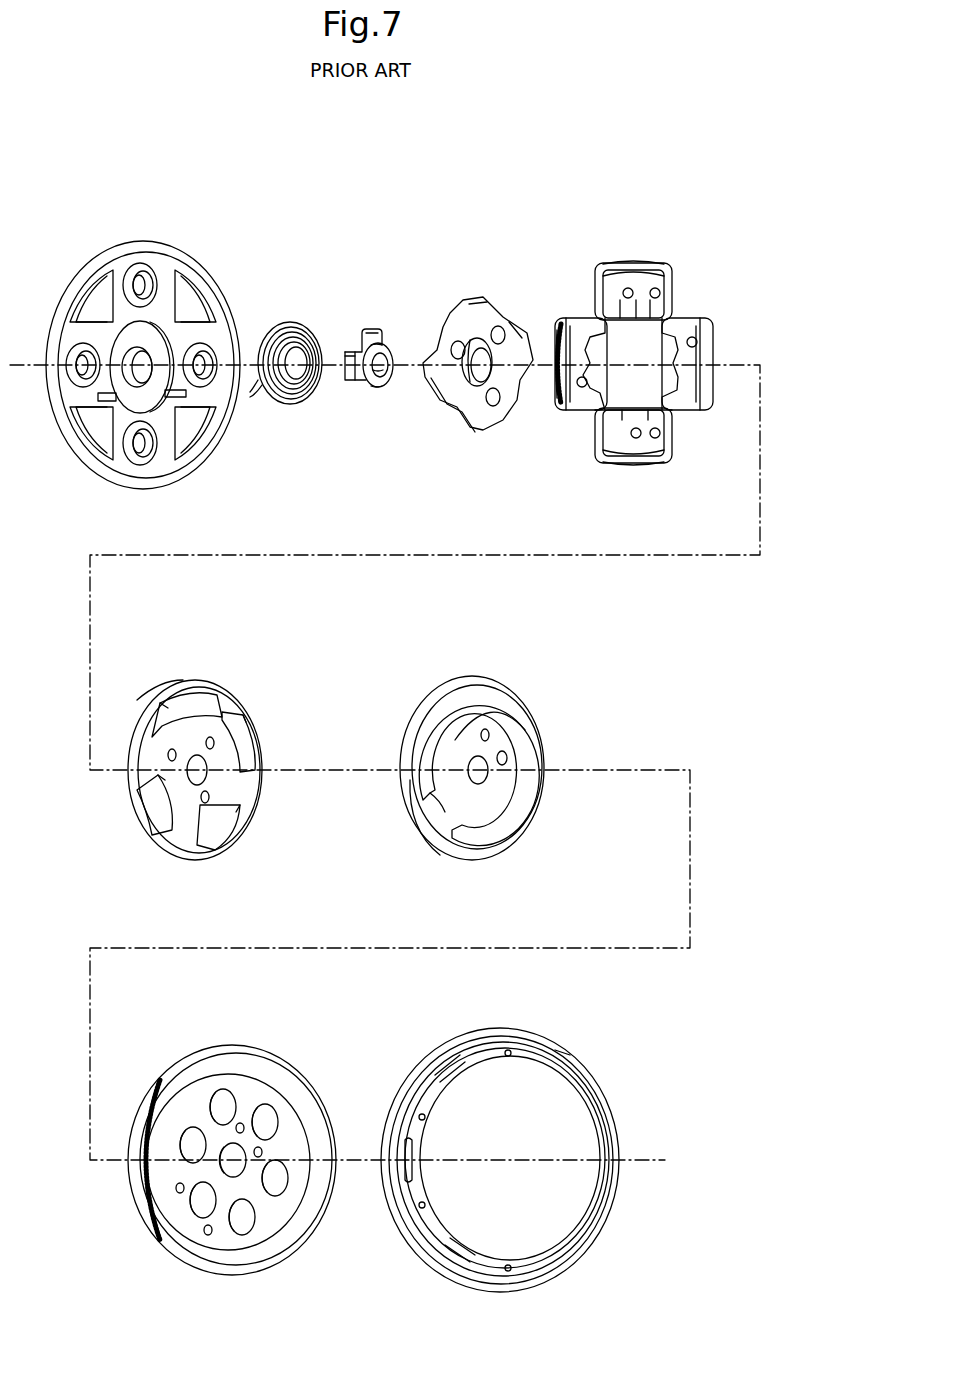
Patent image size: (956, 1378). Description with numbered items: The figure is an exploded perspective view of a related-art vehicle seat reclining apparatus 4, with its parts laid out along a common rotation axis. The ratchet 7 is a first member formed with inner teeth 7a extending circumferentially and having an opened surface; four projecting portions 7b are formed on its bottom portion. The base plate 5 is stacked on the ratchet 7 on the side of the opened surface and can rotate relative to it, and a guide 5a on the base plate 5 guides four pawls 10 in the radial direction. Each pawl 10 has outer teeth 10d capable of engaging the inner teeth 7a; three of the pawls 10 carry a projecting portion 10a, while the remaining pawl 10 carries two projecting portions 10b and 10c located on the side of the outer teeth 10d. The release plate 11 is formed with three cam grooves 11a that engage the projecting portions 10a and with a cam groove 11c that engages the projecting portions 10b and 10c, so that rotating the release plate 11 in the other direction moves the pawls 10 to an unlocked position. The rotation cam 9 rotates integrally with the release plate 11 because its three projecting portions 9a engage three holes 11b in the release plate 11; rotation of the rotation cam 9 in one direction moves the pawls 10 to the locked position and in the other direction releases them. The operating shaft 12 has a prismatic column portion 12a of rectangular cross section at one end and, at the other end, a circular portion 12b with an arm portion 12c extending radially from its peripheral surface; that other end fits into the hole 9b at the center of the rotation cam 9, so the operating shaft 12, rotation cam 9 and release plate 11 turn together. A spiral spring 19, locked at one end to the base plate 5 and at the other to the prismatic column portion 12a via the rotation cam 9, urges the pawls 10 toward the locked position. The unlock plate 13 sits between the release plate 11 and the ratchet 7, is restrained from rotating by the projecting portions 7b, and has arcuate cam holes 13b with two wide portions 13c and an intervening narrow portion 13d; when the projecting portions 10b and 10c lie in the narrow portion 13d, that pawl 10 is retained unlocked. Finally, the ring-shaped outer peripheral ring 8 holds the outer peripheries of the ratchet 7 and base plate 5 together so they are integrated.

The reclining apparatus 4 is at (541, 205).
The base plate 5 is at (114, 252).
The guide 5a is at (93, 302).
The ratchet 7 is at (273, 1277).
The inner teeth 7a is at (152, 1213).
The projecting portions 7b is at (242, 1124).
The outer peripheral ring 8 is at (573, 1252).
The rotation cam 9 is at (460, 296).
The projecting portions 9a is at (454, 346).
The hole 9b is at (477, 380).
The pawls 10 is at (668, 237).
The projecting portion 10a is at (692, 336).
The projecting portion 10b is at (628, 288).
The projecting portion 10c is at (656, 288).
The outer teeth 10d is at (612, 262).
The release plate 11 is at (183, 677).
The cam grooves 11a is at (237, 723).
The holes 11b is at (213, 737).
The cam groove 11c is at (167, 703).
The operating shaft 12 is at (348, 340).
The prismatic column portion 12a is at (355, 382).
The circular portion 12b is at (371, 378).
The arm portion 12c is at (376, 330).
The unlock plate 13 is at (488, 677).
The cam holes 13b is at (598, 668).
The wide portions 13c is at (470, 703).
The narrow portion 13d is at (507, 725).
The spiral spring 19 is at (283, 404).